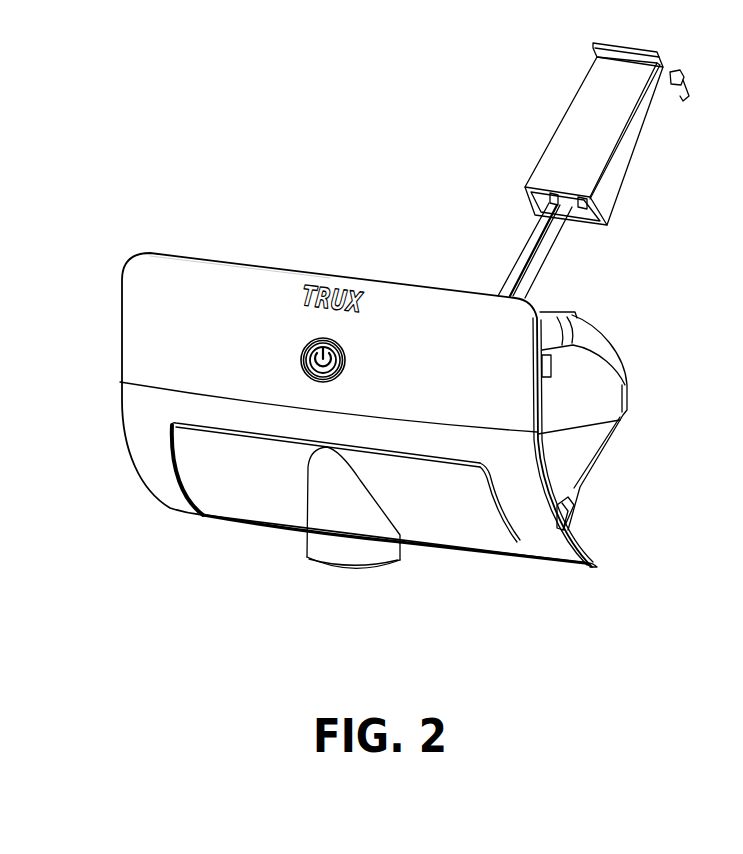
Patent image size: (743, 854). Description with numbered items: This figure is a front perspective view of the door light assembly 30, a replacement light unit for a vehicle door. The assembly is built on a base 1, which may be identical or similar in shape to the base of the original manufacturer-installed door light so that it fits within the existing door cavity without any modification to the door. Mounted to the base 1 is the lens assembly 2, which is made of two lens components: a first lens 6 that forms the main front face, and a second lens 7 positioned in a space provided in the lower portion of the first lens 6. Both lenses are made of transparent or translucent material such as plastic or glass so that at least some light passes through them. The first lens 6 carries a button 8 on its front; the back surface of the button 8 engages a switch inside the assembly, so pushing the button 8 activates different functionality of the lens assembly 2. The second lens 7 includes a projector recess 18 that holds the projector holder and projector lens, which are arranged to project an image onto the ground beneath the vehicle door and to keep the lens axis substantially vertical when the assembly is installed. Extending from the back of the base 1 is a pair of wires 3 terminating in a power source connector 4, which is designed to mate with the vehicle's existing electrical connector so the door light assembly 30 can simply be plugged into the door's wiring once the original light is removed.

The door light assembly 30 is at (180, 168).
The base 1 is at (598, 372).
The lens assembly 2 is at (443, 330).
The pair of wires 3 is at (547, 252).
The power source connector 4 is at (570, 125).
The first lens 6 is at (206, 272).
The second lens 7 is at (253, 508).
The button 8 is at (305, 360).
The projector recess 18 is at (352, 556).